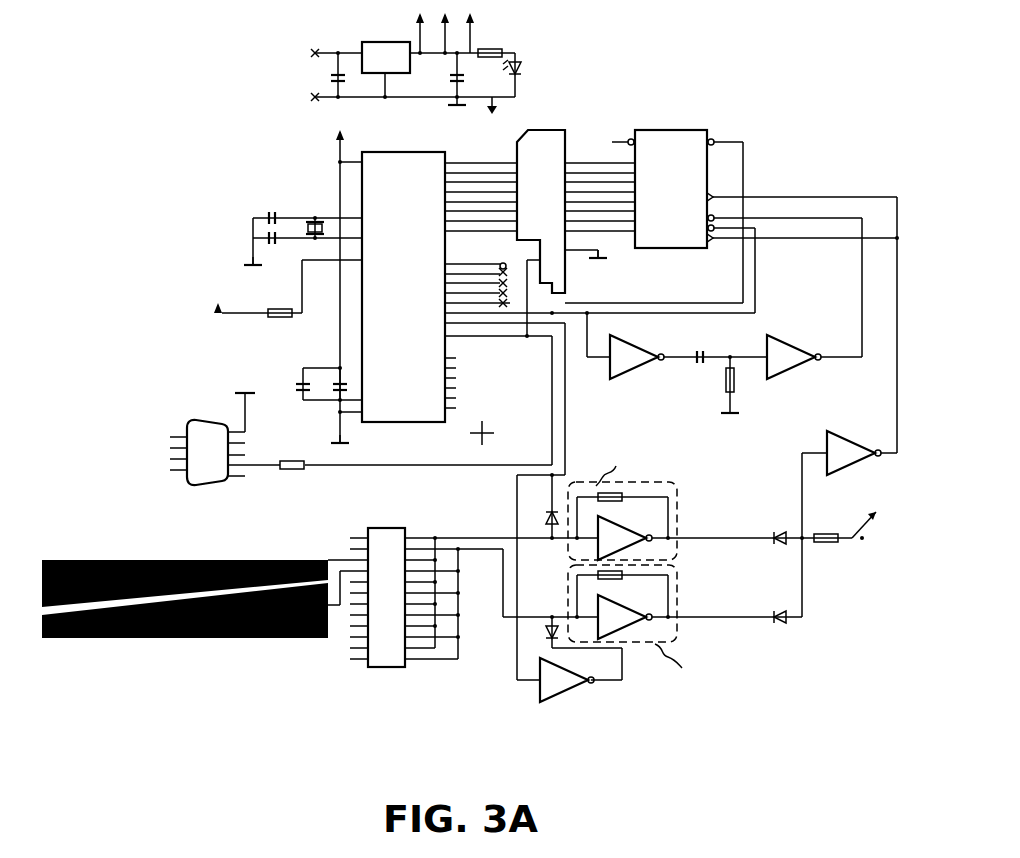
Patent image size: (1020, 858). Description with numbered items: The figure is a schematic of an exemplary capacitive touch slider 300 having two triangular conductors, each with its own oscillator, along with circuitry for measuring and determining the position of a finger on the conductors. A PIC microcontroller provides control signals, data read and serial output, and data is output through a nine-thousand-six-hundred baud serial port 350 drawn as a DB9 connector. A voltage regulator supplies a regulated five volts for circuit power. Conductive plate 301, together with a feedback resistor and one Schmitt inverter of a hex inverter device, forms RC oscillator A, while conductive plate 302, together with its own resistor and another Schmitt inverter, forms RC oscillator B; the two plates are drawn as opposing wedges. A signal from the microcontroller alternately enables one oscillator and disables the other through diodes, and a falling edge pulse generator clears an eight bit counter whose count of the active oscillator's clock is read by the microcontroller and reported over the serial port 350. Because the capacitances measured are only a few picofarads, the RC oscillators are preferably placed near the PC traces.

The capacitive touch slider 300 is at (176, 138).
The conductive plate 301 is at (118, 560).
The conductive plate 302 is at (163, 640).
The serial port 350 is at (187, 478).